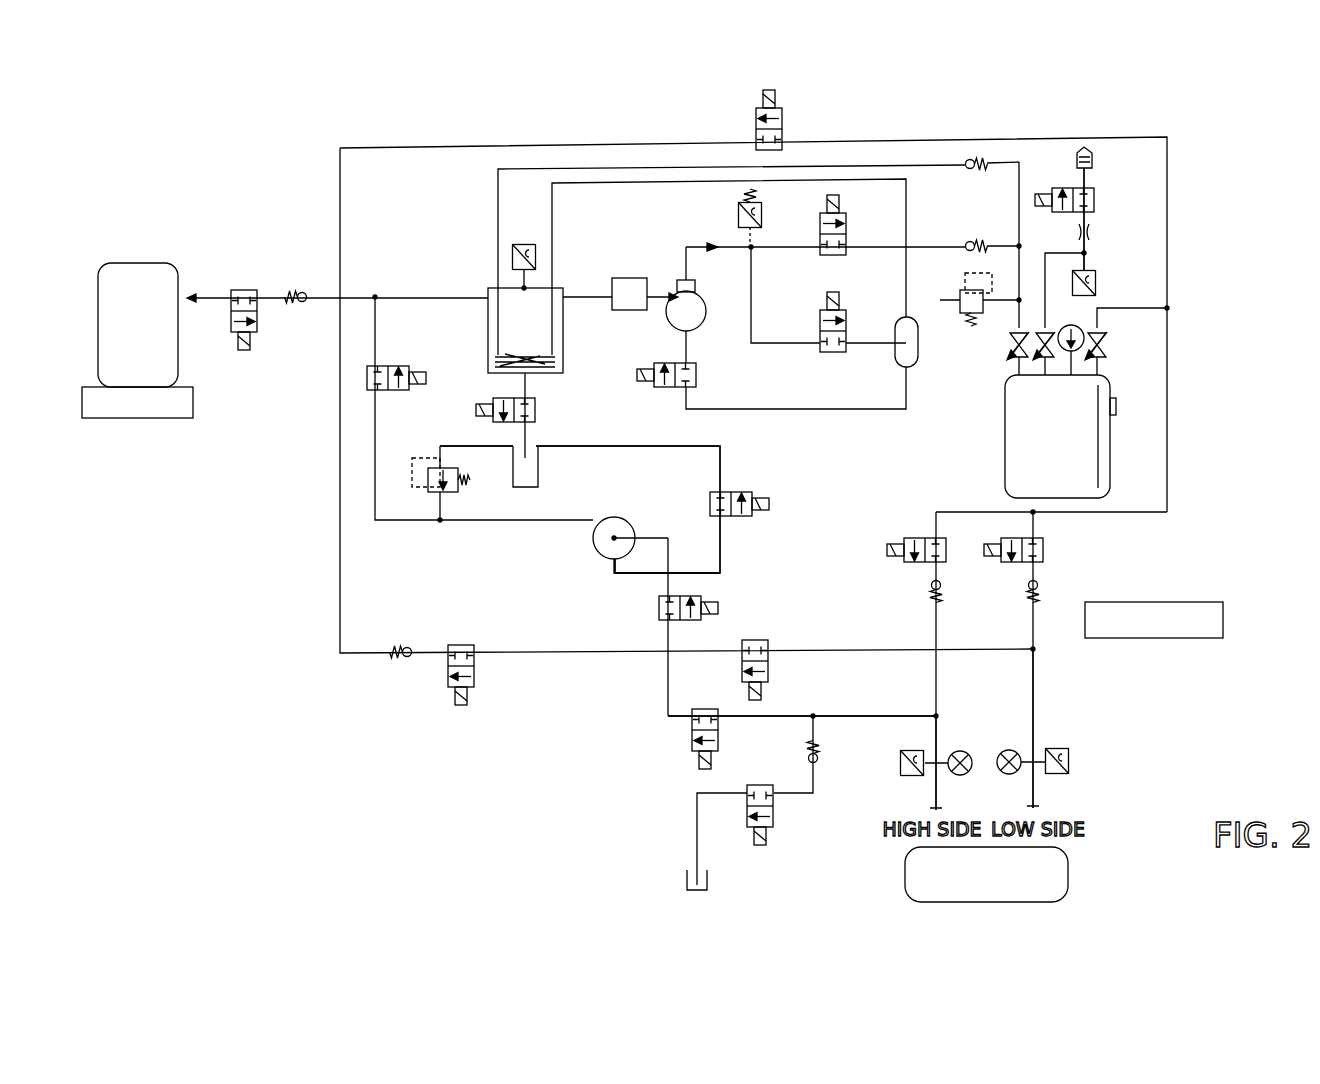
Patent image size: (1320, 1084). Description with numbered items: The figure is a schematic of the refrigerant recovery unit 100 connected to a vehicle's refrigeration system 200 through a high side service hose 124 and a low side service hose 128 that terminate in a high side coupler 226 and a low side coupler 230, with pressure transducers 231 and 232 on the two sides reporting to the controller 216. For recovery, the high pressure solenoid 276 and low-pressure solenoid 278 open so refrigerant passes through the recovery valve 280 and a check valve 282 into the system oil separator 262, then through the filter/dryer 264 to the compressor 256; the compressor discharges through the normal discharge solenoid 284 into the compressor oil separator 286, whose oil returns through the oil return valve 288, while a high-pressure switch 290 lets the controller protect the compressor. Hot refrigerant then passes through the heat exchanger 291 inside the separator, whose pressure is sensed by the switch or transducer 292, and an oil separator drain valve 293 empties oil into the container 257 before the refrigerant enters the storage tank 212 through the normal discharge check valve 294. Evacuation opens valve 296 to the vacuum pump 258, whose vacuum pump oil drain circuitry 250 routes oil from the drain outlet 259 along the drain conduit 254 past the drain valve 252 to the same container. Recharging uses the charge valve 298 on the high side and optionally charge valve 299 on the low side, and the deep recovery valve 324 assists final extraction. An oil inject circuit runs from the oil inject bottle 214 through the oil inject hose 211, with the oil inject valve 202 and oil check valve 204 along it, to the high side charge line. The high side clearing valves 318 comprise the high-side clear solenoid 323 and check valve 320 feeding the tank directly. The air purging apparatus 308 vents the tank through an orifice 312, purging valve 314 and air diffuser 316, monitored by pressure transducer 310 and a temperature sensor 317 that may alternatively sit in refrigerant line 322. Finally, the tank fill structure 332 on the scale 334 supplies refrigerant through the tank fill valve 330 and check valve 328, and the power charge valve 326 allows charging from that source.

The refrigerant recovery unit 100 is at (280, 168).
The service hose 124 is at (944, 782).
The service hose 128 is at (1037, 781).
The refrigeration system 200 is at (1072, 872).
The oil inject valve 202 is at (762, 845).
The oil check valve 204 is at (807, 758).
The oil inject hose 211 is at (818, 733).
The storage tank 212 is at (1003, 425).
The oil inject bottle 214 is at (686, 872).
The controller 216 is at (1225, 617).
The coupler 226 is at (930, 812).
The coupler 230 is at (1040, 810).
The pressure transducer 231 is at (898, 765).
The pressure transducer 232 is at (1061, 748).
The vacuum pump oil drain circuitry 250 is at (808, 473).
The vacuum pump oil drain valve 252 is at (762, 492).
The vacuum pump oil drain conduit 254 is at (596, 445).
The compressor 256 is at (706, 303).
The container 257 is at (540, 477).
The vacuum pump 258 is at (630, 520).
The vacuum pump oil drain outlet 259 is at (608, 559).
The system oil separator 262 is at (565, 330).
The filter/dryer 264 is at (628, 276).
The high pressure solenoid 276 is at (690, 736).
The low-pressure solenoid 278 is at (741, 664).
The recovery valve 280 is at (460, 645).
The check valve 282 is at (398, 647).
The normal discharge solenoid 284 is at (833, 353).
The compressor oil separator 286 is at (919, 347).
The oil return valve 288 is at (697, 375).
The high-pressure switch 290 is at (737, 212).
The heat exchanger 291 is at (556, 360).
The switch or transducer 292 is at (524, 244).
The oil separator drain valve 293 is at (478, 412).
The normal discharge check valve 294 is at (968, 170).
The valve 296 is at (657, 610).
The charge valve 298 is at (885, 552).
The charge valve 299 is at (1045, 550).
The air purging apparatus 308 is at (1194, 190).
The pressure transducer 310 is at (1096, 283).
The orifice 312 is at (1092, 233).
The purging valve 314 is at (1095, 201).
The air diffuser 316 is at (1095, 159).
The temperature sensor 317 is at (1118, 407).
The high side clearing valves 318 is at (938, 266).
The check valve 320 is at (966, 240).
The refrigerant line 322 is at (1017, 203).
The high-side clear solenoid 323 is at (848, 208).
The deep recovery valve 324 is at (414, 366).
The power charge valve 326 is at (784, 101).
The check valve 328 is at (296, 290).
The tank fill valve 330 is at (247, 352).
The tank fill structure 332 is at (146, 262).
The scale 334 is at (166, 420).